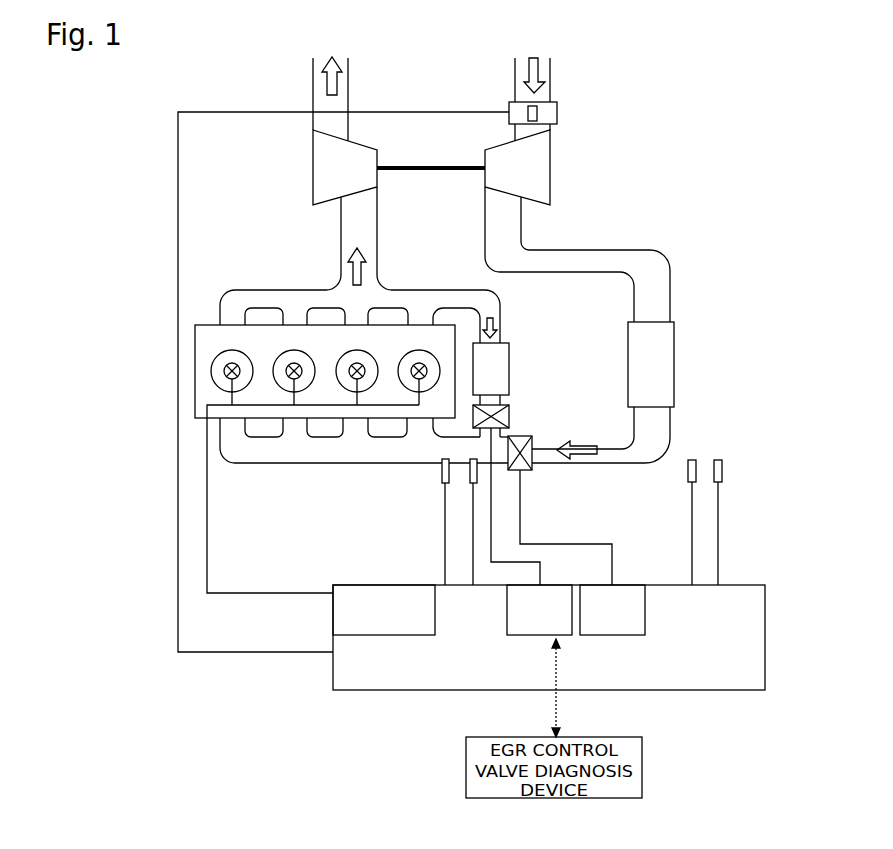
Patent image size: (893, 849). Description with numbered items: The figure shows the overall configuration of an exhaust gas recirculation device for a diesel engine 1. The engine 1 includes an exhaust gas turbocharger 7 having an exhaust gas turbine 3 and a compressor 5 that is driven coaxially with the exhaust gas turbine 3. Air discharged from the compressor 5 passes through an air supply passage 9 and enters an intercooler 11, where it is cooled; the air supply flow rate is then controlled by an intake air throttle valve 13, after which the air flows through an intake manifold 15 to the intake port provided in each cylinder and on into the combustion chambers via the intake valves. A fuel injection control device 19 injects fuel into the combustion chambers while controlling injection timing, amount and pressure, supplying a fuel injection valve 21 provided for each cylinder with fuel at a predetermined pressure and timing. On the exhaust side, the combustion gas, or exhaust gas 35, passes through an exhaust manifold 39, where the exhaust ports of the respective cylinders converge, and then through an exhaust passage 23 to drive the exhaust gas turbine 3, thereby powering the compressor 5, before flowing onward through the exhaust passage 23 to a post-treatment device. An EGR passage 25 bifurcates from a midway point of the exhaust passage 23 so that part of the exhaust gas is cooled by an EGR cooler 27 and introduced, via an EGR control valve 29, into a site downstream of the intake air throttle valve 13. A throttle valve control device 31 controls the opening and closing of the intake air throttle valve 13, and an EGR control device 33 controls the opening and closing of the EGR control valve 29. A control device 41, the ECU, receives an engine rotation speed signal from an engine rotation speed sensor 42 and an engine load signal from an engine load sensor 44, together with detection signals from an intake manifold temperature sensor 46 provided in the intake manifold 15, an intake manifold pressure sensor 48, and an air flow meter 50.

The diesel engine 1 is at (165, 448).
The exhaust gas turbine 3 is at (313, 171).
The compressor 5 is at (556, 170).
The exhaust gas turbocharger 7 is at (432, 121).
The air supply passage 9 is at (668, 292).
The intercooler 11 is at (674, 330).
The intake air throttle valve 13 is at (522, 472).
The intake manifold 15 is at (297, 459).
The fuel injection control device 19 is at (375, 628).
The fuel injection valve 21 is at (222, 371).
The exhaust passage 23 is at (377, 213).
The EGR passage 25 is at (500, 302).
The EGR cooler 27 is at (509, 352).
The EGR control valve 29 is at (509, 413).
The throttle valve control device 31 is at (629, 625).
The EGR control device 33 is at (522, 625).
The exhaust gas 35 is at (366, 264).
The exhaust manifold 39 is at (270, 300).
The control device (ECU) 41 is at (549, 672).
The engine rotation speed sensor 42 is at (718, 458).
The engine load sensor 44 is at (692, 458).
The intake manifold temperature sensor 46 is at (442, 472).
The intake manifold pressure sensor 48 is at (471, 484).
The air flow meter 50 is at (558, 112).